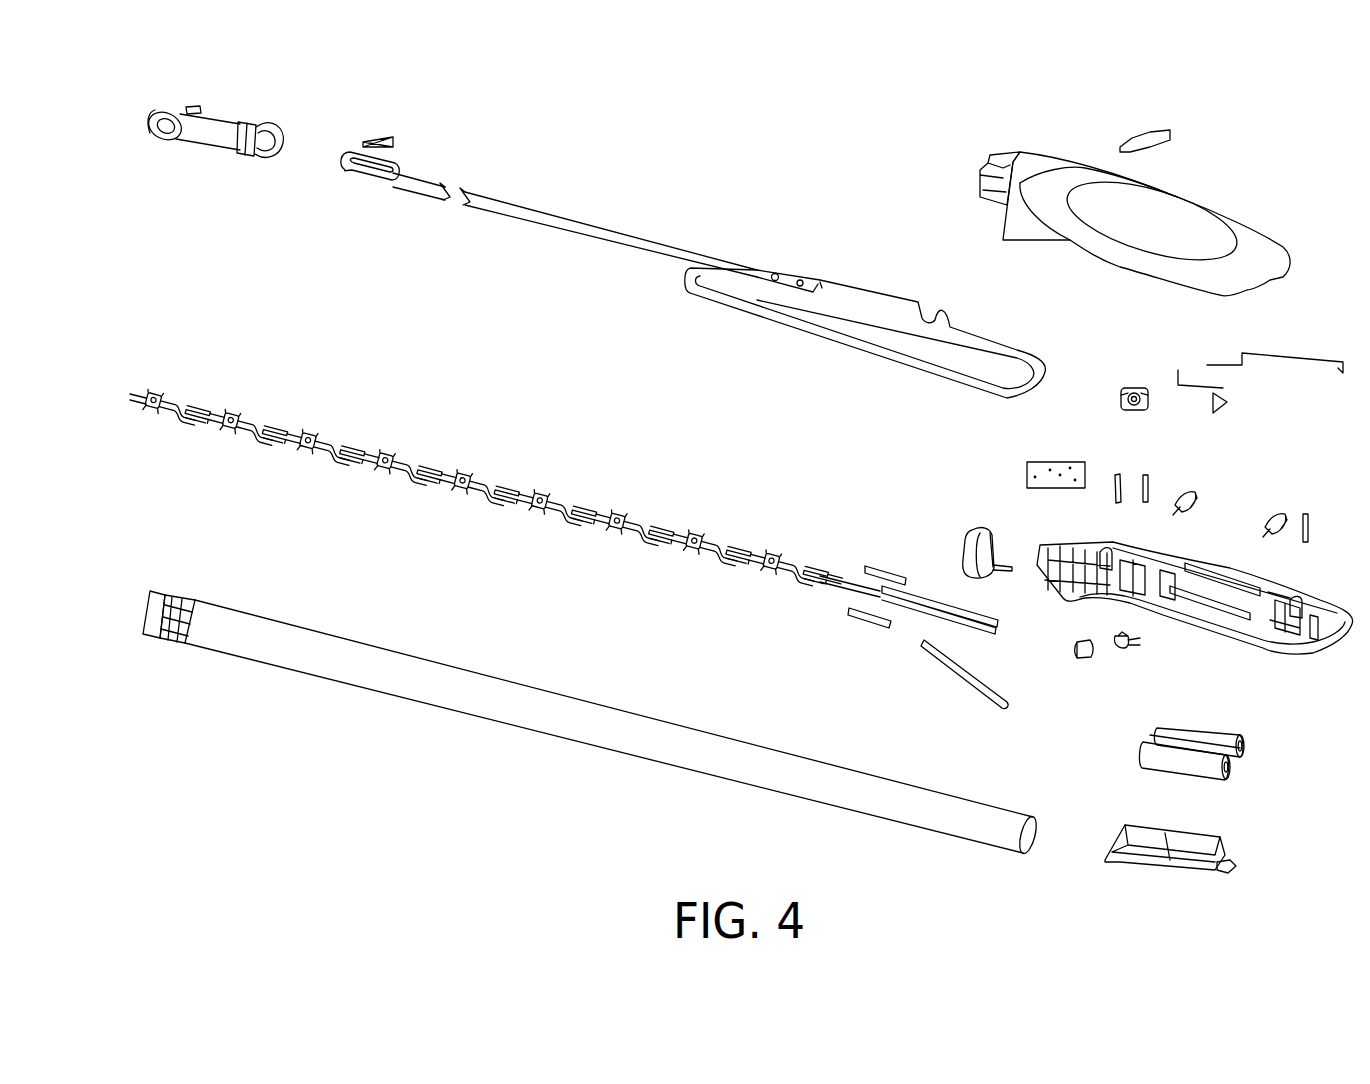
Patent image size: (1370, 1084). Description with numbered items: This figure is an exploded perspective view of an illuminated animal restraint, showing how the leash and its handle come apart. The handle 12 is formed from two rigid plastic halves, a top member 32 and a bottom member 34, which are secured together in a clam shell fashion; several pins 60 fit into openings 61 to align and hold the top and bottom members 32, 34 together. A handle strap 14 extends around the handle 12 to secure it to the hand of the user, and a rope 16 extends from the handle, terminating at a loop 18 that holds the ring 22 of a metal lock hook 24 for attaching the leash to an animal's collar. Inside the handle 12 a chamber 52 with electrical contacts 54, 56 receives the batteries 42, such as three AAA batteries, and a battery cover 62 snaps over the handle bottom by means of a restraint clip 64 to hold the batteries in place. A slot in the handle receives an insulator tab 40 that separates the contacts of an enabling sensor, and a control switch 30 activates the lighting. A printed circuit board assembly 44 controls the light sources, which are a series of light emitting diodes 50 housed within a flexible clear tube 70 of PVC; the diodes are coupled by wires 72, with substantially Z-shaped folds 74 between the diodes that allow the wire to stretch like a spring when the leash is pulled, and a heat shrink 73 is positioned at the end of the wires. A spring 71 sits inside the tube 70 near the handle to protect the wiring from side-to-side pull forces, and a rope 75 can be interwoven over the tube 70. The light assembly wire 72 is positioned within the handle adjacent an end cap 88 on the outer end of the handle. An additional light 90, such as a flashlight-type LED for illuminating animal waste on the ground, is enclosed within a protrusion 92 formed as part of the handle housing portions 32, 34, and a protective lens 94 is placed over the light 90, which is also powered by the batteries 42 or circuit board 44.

The handle 12 is at (1193, 181).
The handle strap 14 is at (865, 287).
The rope 16 is at (537, 215).
The loop 18 is at (360, 187).
The ring 22 is at (272, 128).
The metal lock hook 24 is at (180, 138).
The control switch 30 is at (1127, 388).
The top member 32 is at (1242, 232).
The bottom member 34 is at (1288, 655).
The insulator tab 40 is at (1152, 130).
The batteries 42 is at (1162, 763).
The printed circuit board assembly 44 is at (1045, 465).
The light emitting diodes 50 is at (155, 396).
The chamber 52 is at (1222, 640).
The electrical contact 54 is at (1195, 484).
The electrical contact 56 is at (1287, 503).
The pins 60 is at (1118, 475).
The openings 61 is at (1107, 547).
The battery cover 62 is at (1152, 867).
The restraint clip 64 is at (1227, 873).
The tube 70 is at (467, 675).
The spring 71 is at (192, 600).
The wires 72 is at (828, 588).
The heat shrink 73 is at (867, 615).
The folds 74 is at (497, 503).
The rope 75 is at (950, 668).
The end cap 88 is at (982, 532).
The additional light 90 is at (1122, 643).
The protrusion 92 is at (1022, 240).
The protective lens 94 is at (1088, 655).